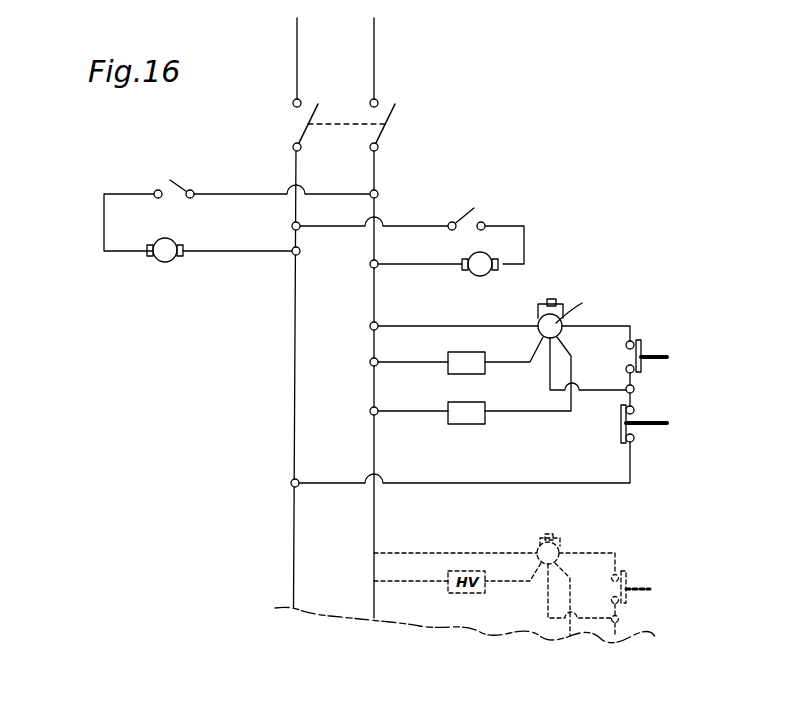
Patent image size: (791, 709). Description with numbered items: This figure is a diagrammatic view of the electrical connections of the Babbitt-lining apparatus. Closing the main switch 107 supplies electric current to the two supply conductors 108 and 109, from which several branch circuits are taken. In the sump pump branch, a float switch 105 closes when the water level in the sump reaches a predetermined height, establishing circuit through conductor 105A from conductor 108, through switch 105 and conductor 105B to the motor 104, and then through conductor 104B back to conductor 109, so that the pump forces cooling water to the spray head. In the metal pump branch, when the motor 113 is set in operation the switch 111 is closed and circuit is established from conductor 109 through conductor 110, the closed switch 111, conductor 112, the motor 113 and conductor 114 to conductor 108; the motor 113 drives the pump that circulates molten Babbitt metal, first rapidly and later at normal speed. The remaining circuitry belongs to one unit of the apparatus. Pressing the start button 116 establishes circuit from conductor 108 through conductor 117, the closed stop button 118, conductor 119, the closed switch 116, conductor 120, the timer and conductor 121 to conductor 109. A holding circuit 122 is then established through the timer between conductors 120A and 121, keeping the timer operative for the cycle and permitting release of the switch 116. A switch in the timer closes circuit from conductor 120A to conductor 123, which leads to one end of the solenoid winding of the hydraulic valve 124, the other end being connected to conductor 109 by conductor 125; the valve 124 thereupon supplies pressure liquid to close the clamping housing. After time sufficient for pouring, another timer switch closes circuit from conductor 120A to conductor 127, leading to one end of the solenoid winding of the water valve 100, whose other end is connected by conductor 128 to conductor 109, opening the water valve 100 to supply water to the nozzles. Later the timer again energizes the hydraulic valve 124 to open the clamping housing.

The water valve 100 is at (458, 424).
The motor 104 is at (472, 276).
The conductor 104B is at (397, 264).
The float switch 105 is at (470, 204).
The conductor 105A is at (397, 225).
The conductor 105B is at (524, 240).
The main switch 107 is at (402, 120).
The conductor 108 is at (295, 348).
The conductor 109 is at (374, 165).
The conductor 110 is at (213, 194).
The switch 111 is at (166, 180).
The conductor 112 is at (104, 217).
The motor 113 is at (162, 262).
The conductor 114 is at (217, 253).
The start button 116 is at (642, 351).
The conductor 117 is at (443, 485).
The stop button 118 is at (618, 440).
The conductor 119 is at (633, 397).
The conductor 120 is at (614, 326).
The conductor 120A is at (587, 390).
The conductor 121 is at (392, 326).
The holding circuit 122 is at (560, 302).
The conductor 123 is at (496, 362).
The hydraulic valve 124 is at (455, 352).
The conductor 125 is at (392, 362).
The conductor 127 is at (508, 412).
The conductor 128 is at (392, 412).